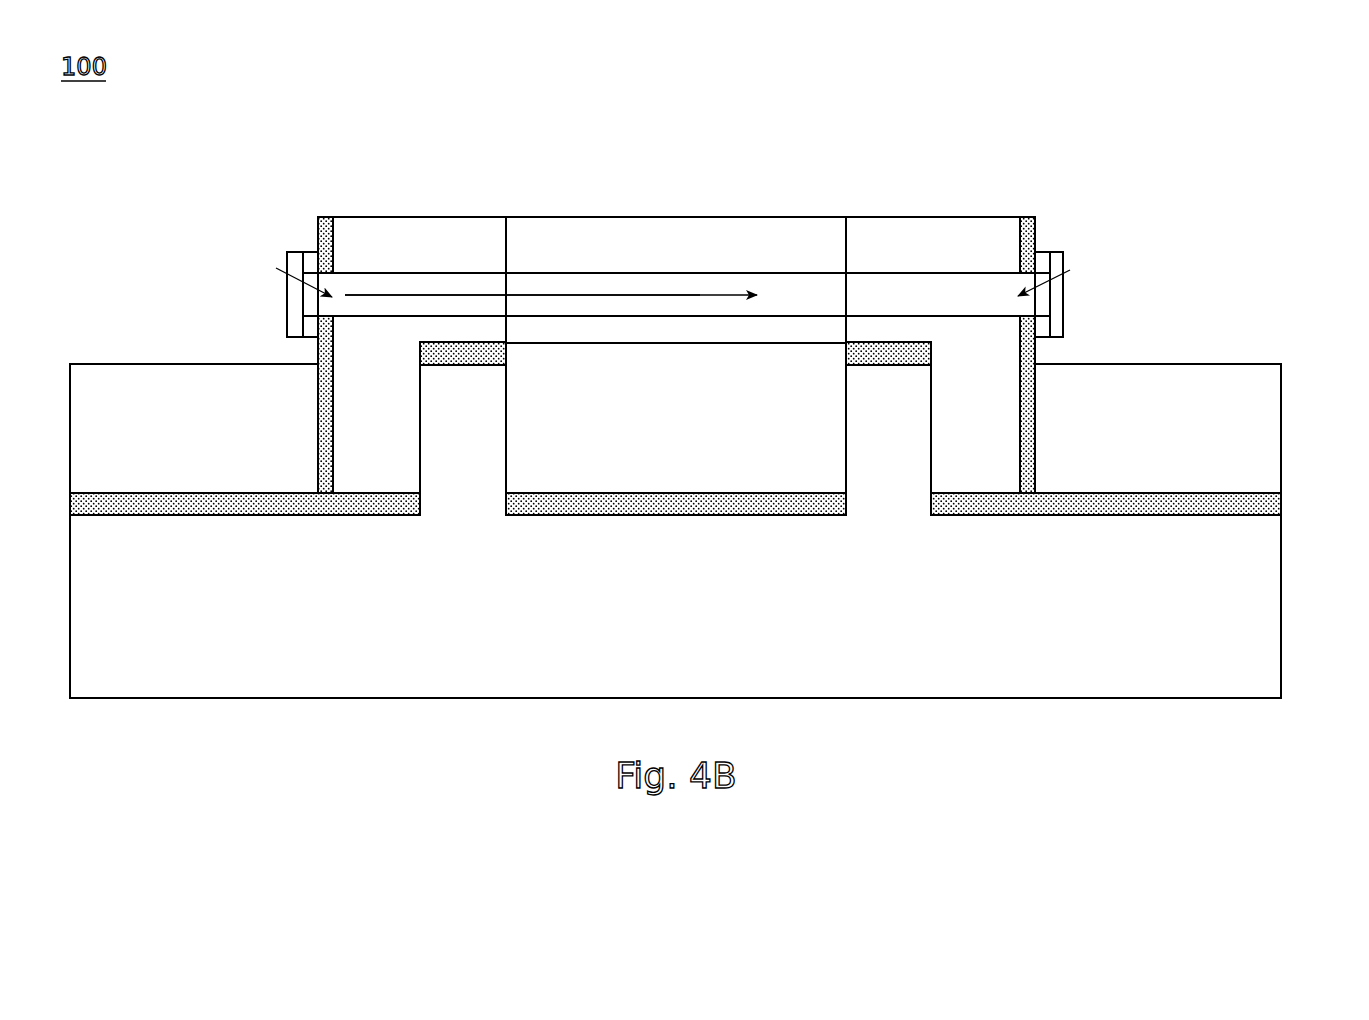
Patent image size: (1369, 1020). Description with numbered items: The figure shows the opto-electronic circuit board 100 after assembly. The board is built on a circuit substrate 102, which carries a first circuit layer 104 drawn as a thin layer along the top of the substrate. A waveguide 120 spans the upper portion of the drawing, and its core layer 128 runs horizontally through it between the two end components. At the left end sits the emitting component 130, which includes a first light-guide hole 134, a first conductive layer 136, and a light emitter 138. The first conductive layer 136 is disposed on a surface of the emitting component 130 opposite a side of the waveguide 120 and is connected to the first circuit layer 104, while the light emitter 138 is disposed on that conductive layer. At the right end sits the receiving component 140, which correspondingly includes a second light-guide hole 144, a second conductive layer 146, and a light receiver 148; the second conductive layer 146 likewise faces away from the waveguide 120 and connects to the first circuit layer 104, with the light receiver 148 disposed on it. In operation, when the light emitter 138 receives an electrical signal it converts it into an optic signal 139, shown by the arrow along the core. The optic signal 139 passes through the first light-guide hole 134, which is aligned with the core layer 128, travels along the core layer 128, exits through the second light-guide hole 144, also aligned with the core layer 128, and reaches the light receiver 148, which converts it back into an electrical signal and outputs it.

The opto-electronic circuit board 100 is at (671, 375).
The circuit substrate 102 is at (1273, 611).
The first circuit layer 104 is at (1273, 505).
The waveguide 120 is at (762, 226).
The core layer 128 is at (628, 282).
The emitting component 130 is at (448, 225).
The first light-guide hole 134 is at (276, 268).
The first conductive layer 136 is at (316, 230).
The light emitter 138 is at (290, 292).
The optic signal 139 is at (549, 293).
The receiving component 140 is at (931, 228).
The second light-guide hole 144 is at (1070, 270).
The second conductive layer 146 is at (1037, 230).
The light receiver 148 is at (1057, 292).